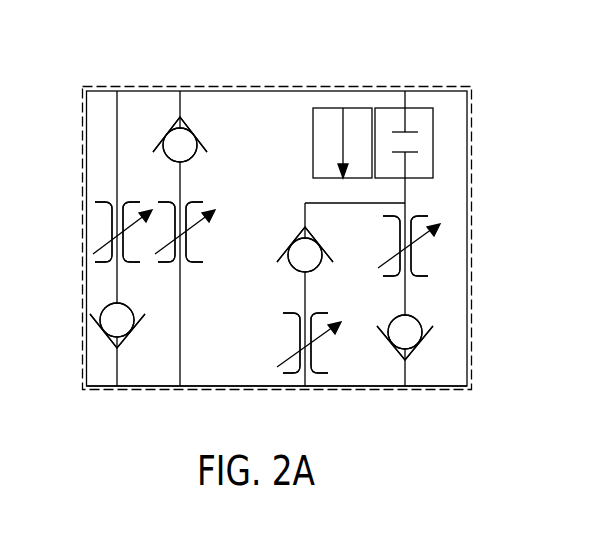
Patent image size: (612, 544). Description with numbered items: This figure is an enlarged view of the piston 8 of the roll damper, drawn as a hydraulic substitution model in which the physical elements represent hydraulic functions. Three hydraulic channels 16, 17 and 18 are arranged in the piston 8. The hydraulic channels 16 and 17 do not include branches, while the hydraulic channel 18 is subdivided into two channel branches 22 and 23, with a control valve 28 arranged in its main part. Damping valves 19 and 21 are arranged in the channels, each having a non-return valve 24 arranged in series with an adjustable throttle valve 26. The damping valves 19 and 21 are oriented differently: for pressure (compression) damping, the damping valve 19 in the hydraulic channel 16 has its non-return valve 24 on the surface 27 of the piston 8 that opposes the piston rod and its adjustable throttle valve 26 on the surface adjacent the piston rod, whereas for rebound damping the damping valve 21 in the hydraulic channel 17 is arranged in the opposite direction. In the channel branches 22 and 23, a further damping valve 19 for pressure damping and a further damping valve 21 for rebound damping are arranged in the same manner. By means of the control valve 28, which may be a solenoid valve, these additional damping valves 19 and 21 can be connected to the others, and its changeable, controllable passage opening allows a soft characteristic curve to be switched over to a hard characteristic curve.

The piston 8 is at (470, 93).
The hydraulic channel 16 is at (115, 130).
The hydraulic channel 17 is at (178, 365).
The hydraulic channel 18 is at (405, 95).
The damping valve 19 is at (93, 322).
The damping valve 21 is at (178, 117).
The channel branch 22 is at (349, 311).
The channel branch 23 is at (407, 378).
The non-return valve 24 is at (178, 117).
The adjustable throttle valve 26 is at (97, 205).
The surface of the piston 27 is at (343, 387).
The control valve 28 is at (358, 107).